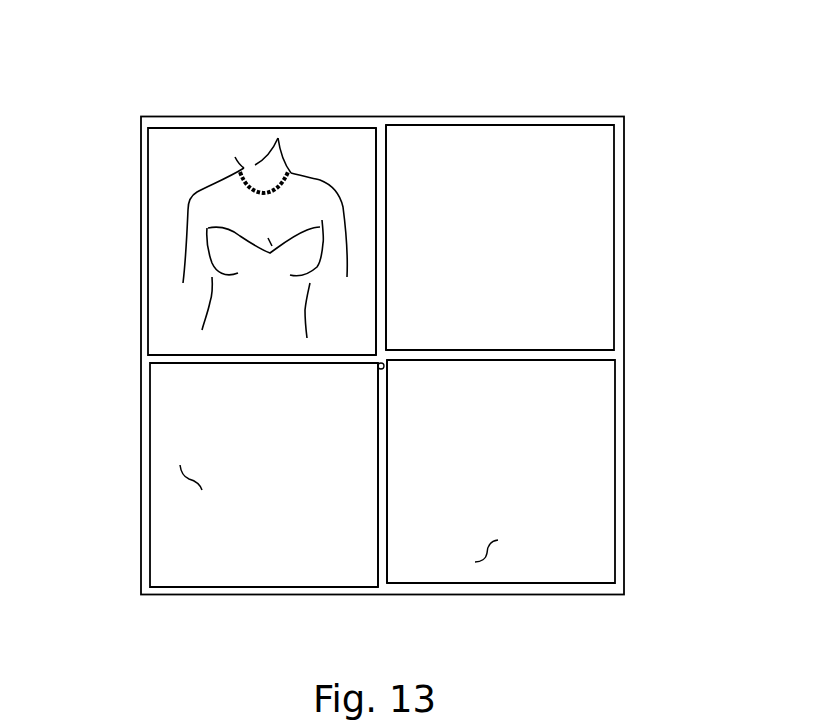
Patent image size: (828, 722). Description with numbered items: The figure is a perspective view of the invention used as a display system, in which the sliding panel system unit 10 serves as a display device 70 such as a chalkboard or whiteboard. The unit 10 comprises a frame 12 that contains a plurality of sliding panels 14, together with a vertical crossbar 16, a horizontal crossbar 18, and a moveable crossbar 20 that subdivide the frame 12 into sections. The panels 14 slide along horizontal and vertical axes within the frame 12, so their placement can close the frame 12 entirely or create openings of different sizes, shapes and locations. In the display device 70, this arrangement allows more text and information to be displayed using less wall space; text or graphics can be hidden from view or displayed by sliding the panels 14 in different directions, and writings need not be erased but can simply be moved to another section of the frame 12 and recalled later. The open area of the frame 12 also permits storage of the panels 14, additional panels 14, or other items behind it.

The sliding panel system unit 10 is at (118, 88).
The frame 12 is at (623, 175).
The sliding panels 14 is at (185, 480).
The vertical crossbar 16 is at (378, 528).
The horizontal crossbar 18 is at (562, 348).
The moveable crossbar 20 is at (195, 365).
The display device 70 is at (453, 112).